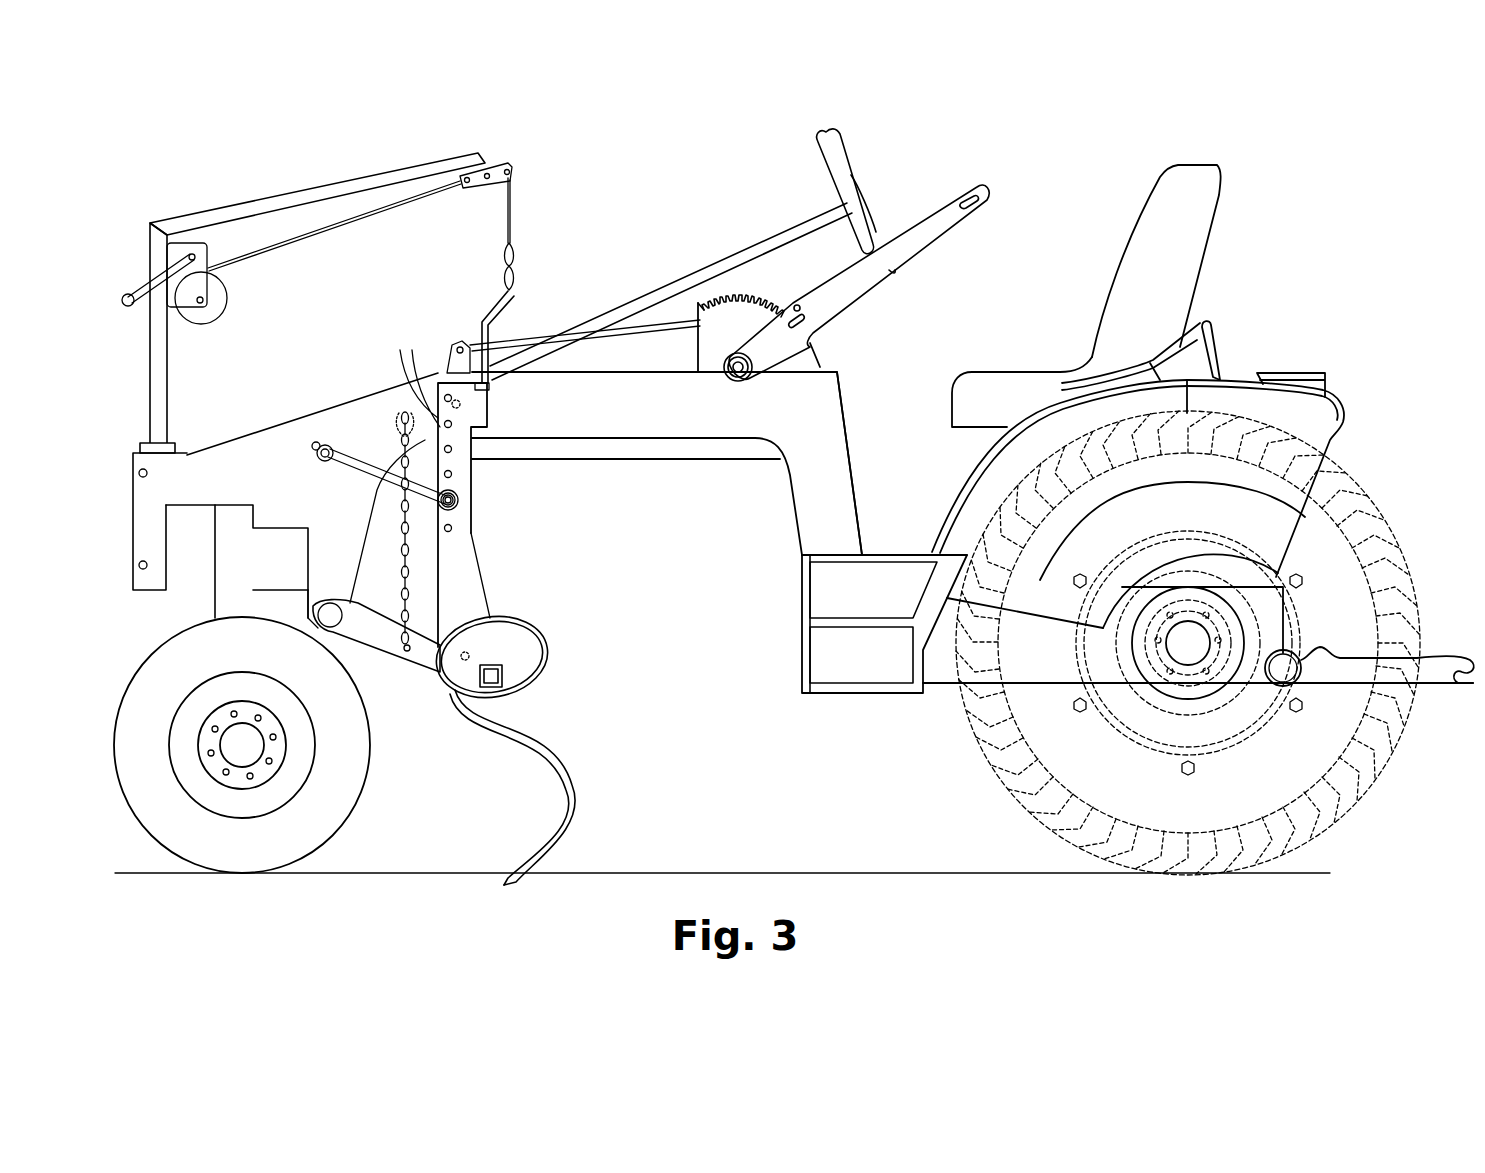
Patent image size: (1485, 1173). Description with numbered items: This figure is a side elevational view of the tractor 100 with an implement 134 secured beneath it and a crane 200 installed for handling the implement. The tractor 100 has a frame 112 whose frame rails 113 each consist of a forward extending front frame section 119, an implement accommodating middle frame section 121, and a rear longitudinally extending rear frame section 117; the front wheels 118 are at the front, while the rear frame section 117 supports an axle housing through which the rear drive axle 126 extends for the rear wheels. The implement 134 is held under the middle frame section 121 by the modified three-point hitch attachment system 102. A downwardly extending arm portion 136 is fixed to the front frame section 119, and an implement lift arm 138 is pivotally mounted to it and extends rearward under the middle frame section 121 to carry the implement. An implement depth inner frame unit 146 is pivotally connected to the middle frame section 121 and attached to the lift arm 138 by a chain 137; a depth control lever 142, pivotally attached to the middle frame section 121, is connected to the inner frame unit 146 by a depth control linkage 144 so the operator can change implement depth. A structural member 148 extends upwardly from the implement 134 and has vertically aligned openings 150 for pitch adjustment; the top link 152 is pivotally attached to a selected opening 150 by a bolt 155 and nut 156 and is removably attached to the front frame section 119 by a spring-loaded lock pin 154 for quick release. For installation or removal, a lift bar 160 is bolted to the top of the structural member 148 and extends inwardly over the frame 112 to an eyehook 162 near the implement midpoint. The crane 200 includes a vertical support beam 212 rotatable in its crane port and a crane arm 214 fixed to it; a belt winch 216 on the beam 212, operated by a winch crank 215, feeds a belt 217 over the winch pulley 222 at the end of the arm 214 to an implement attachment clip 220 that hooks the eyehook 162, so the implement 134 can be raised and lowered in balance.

The tractor 100 is at (1312, 198).
The modified three-point hitch attachment system 102 is at (263, 137).
The frame 112 is at (130, 450).
The frame rail 113 is at (840, 393).
The rear frame section 117 is at (940, 667).
The front wheels 118 is at (310, 818).
The front frame section 119 is at (267, 465).
The implement accommodating middle frame section 121 is at (638, 412).
The rear drive axle 126 is at (1158, 655).
The implement 134 is at (503, 673).
The downwardly extending arm portion 136 is at (313, 603).
The chain 137 is at (400, 563).
The implement lift arm 138 is at (392, 643).
The depth control lever 142 is at (843, 283).
The depth control linkage 144 is at (520, 337).
The implement depth inner frame unit 146 is at (443, 363).
The structural member 148 is at (460, 445).
The vertically aligned openings 150 is at (440, 387).
The top link 152 is at (372, 460).
The spring-loaded lock pin 154 is at (318, 438).
The bolt 155 is at (450, 507).
The nut 156 is at (450, 500).
The lift bar 160 is at (473, 333).
The eyehook 162 is at (515, 292).
The crane 200 is at (145, 317).
The vertical support beam 212 is at (160, 358).
The crane arm 214 is at (363, 177).
The winch crank 215 is at (127, 293).
The belt winch 216 is at (183, 250).
The belt 217 is at (510, 213).
The implement attachment clip 220 is at (510, 270).
The winch pulley 222 is at (500, 160).